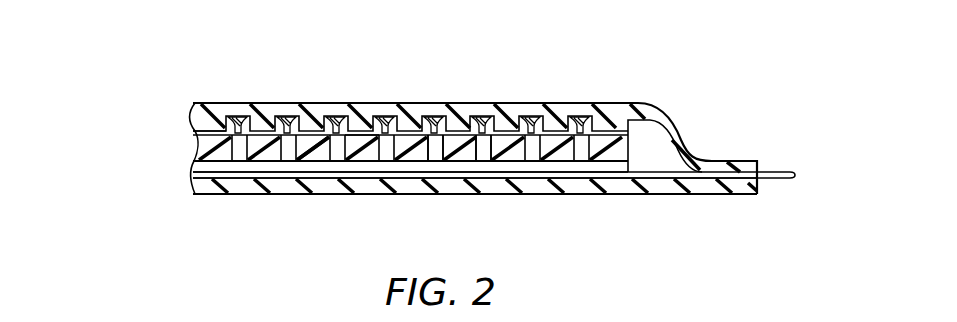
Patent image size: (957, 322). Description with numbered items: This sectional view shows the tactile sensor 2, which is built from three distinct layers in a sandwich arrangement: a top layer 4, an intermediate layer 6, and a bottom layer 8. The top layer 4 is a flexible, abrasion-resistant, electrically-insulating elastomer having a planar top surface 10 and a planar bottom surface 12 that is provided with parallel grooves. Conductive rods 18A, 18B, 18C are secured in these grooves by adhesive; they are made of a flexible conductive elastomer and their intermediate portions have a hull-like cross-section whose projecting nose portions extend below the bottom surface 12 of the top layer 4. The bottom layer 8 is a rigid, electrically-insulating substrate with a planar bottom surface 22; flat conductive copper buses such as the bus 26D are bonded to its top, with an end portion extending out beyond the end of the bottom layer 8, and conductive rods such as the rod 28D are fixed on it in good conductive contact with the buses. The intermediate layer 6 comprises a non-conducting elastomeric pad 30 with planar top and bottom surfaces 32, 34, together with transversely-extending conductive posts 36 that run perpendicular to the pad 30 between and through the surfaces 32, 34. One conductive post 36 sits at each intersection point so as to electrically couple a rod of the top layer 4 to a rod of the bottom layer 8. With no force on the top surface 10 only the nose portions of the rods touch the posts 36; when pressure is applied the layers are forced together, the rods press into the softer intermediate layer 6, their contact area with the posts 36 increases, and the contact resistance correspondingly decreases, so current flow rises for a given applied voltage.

The tactile sensor 2 is at (271, 66).
The top layer 4 is at (186, 114).
The intermediate layer 6 is at (185, 149).
The bottom layer 8 is at (185, 189).
The top surface 10 is at (205, 103).
The bottom surface 12 is at (203, 133).
The conductive rod 18A is at (582, 119).
The conductive rod 18B is at (532, 119).
The conductive rod 18C is at (480, 119).
The bottom surface 22 is at (358, 194).
The conductive copper bus 26D is at (777, 177).
The conductive rod 28D is at (562, 165).
The pad 30 is at (310, 143).
The top surface 32 is at (359, 133).
The bottom surface 34 is at (408, 158).
The conductive post 36 is at (481, 152).